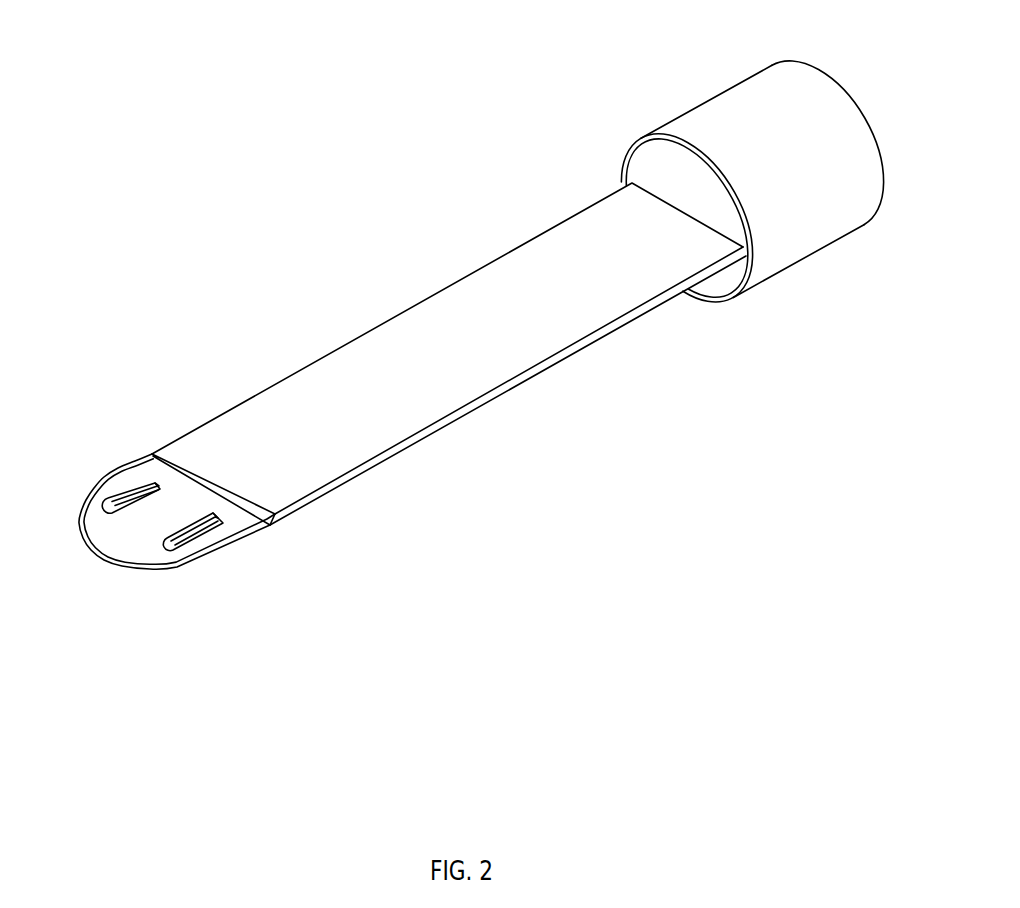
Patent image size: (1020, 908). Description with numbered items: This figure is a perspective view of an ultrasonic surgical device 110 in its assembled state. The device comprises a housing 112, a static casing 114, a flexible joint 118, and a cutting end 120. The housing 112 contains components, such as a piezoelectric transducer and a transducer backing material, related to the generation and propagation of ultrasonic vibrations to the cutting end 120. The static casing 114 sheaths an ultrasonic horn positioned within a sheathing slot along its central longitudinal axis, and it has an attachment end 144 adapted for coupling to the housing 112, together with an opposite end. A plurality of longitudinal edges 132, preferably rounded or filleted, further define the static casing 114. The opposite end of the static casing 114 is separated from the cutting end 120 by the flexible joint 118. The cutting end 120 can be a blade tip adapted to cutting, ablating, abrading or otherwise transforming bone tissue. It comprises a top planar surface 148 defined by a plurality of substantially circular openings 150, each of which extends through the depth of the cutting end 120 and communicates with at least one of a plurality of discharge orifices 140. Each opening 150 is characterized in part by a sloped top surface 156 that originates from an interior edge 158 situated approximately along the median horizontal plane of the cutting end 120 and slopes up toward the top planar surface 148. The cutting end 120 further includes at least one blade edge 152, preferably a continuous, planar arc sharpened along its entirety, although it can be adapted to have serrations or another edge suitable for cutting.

The ultrasonic surgical device 110 is at (372, 92).
The housing 112 is at (740, 127).
The attachment end 144 is at (662, 175).
The static casing 114 is at (383, 390).
The longitudinal edges 132 is at (488, 398).
The flexible joint 118 is at (192, 473).
The cutting end 120 is at (113, 625).
The top planar surface 148 is at (137, 540).
The blade edge 152 is at (115, 563).
The discharge orifices 140 is at (127, 498).
The sloped top surface 156 is at (120, 487).
The openings 150 is at (198, 537).
The interior edge 158 is at (183, 541).